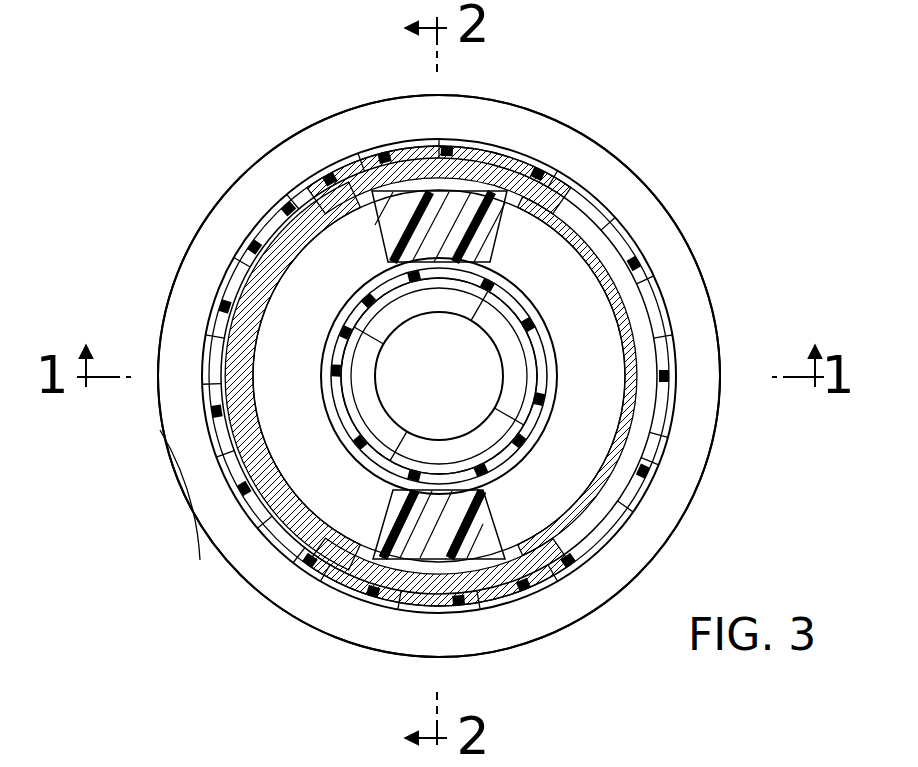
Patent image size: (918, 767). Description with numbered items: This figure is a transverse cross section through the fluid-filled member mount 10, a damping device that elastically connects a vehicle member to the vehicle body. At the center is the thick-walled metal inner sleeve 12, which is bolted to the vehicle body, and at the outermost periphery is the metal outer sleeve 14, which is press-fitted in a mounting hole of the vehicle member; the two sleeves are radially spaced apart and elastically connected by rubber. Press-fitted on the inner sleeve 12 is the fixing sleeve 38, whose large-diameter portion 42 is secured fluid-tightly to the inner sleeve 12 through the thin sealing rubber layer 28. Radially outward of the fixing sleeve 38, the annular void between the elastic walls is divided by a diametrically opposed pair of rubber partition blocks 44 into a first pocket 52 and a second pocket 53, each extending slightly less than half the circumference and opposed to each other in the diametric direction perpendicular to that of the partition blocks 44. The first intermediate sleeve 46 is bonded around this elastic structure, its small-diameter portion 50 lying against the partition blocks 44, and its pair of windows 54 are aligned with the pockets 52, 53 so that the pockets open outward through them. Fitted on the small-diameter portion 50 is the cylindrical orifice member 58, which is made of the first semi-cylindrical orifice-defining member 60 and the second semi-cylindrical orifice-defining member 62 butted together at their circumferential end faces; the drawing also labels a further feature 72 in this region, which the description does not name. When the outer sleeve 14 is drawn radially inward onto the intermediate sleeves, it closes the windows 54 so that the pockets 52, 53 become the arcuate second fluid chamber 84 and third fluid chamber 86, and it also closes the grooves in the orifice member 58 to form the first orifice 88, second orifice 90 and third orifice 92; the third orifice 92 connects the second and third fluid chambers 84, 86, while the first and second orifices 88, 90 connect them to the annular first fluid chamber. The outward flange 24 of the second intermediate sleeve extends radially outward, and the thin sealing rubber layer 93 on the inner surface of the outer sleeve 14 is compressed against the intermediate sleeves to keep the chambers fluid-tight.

The member mount 10 is at (572, 60).
The inner sleeve 12 is at (365, 390).
The outer sleeve 14 is at (210, 348).
The outward flange 24 is at (198, 487).
The sealing rubber layer 28 is at (532, 350).
The fixing sleeve 38 is at (552, 350).
The large-diameter portion 42 is at (561, 376).
The partition blocks 44 is at (463, 191).
The first intermediate sleeve 46 is at (470, 563).
The small-diameter portion 50 is at (507, 604).
The first pocket 52 is at (557, 195).
The second pocket 53 is at (380, 233).
The windows 54 is at (540, 563).
The orifice member 58 is at (203, 415).
The first semi-cylindrical orifice-defining member 60 is at (633, 482).
The second semi-cylindrical orifice-defining member 62 is at (203, 417).
The retainer ring 72 is at (600, 190).
The second fluid chamber 84 is at (606, 400).
The third fluid chamber 86 is at (288, 442).
The first orifice 88 is at (598, 233).
The second orifice 90 is at (250, 287).
The third orifice 92 is at (310, 543).
The sealing rubber layer 93 is at (653, 457).